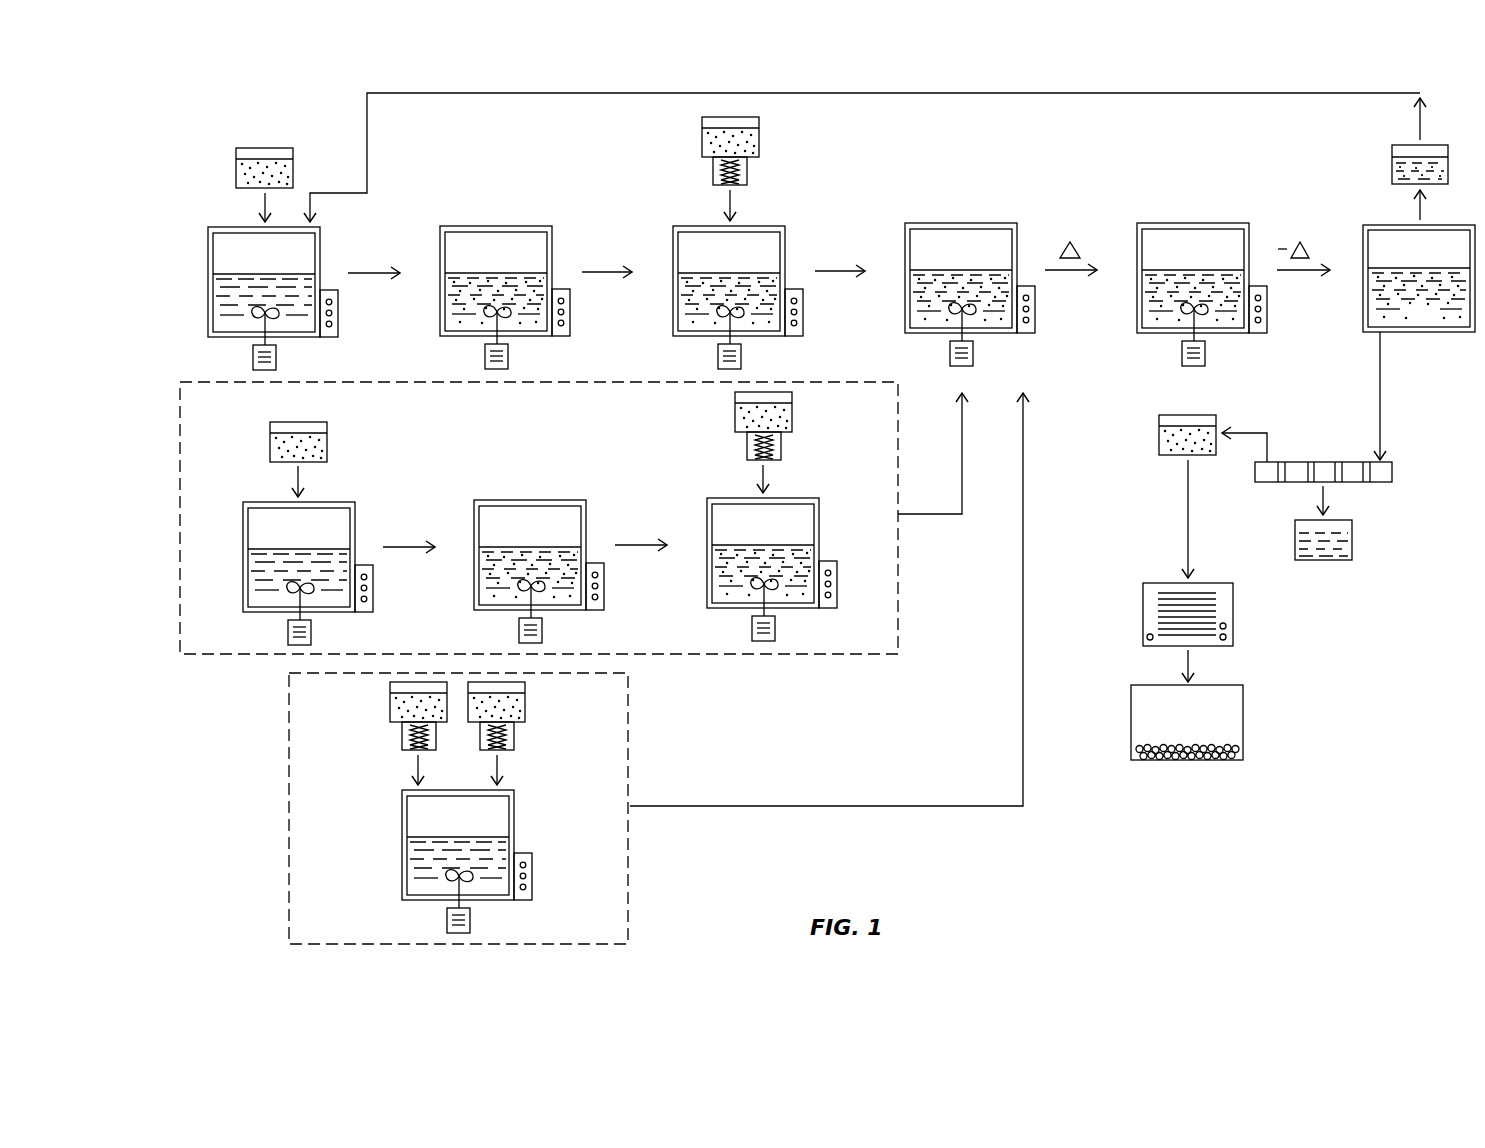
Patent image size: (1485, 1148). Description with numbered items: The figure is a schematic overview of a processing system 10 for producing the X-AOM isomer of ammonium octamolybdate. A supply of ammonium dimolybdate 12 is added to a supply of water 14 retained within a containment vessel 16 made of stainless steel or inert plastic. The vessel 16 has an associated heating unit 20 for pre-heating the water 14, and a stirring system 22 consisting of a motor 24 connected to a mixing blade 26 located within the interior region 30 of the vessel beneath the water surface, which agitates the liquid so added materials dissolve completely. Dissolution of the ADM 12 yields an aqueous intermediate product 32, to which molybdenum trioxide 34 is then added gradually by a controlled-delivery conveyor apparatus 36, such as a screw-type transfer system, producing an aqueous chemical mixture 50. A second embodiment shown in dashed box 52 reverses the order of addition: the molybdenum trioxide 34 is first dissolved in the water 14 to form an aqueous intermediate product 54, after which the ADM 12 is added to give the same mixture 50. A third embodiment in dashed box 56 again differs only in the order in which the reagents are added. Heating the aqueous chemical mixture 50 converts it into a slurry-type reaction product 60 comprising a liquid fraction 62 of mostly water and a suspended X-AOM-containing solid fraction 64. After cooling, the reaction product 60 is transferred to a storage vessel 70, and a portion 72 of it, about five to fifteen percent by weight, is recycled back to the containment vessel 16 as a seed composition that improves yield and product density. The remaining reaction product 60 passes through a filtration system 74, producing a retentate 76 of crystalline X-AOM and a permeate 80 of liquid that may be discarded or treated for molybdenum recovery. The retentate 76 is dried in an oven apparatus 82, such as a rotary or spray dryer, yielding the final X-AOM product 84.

The processing system 10 is at (1290, 839).
The ammonium dimolybdate 12 is at (236, 173).
The water 14 is at (222, 297).
The containment vessel 16 is at (316, 229).
The heating unit 20 is at (338, 313).
The stirring system 22 is at (253, 354).
The motor 24 is at (276, 358).
The mixing blade 26 is at (252, 318).
The interior region 30 is at (252, 267).
The aqueous intermediate product 32 is at (454, 296).
The molybdenum trioxide 34 is at (759, 138).
The controlled-delivery conveyor apparatus 36 is at (713, 170).
The aqueous chemical mixture 50 is at (919, 293).
The dashed box 52 is at (900, 594).
The aqueous intermediate product 54 is at (488, 570).
The dashed box 56 is at (630, 680).
The reaction product 60 is at (1151, 293).
The liquid fraction 62 is at (1212, 268).
The solid fraction 64 is at (1226, 318).
The storage vessel 70 is at (1365, 228).
The portion of the reaction product 72 is at (1392, 149).
The filtration system 74 is at (1323, 462).
The retentate 76 is at (1159, 440).
The permeate 80 is at (1295, 546).
The oven apparatus 82 is at (1228, 605).
The final X-AOM product 84 is at (1225, 745).